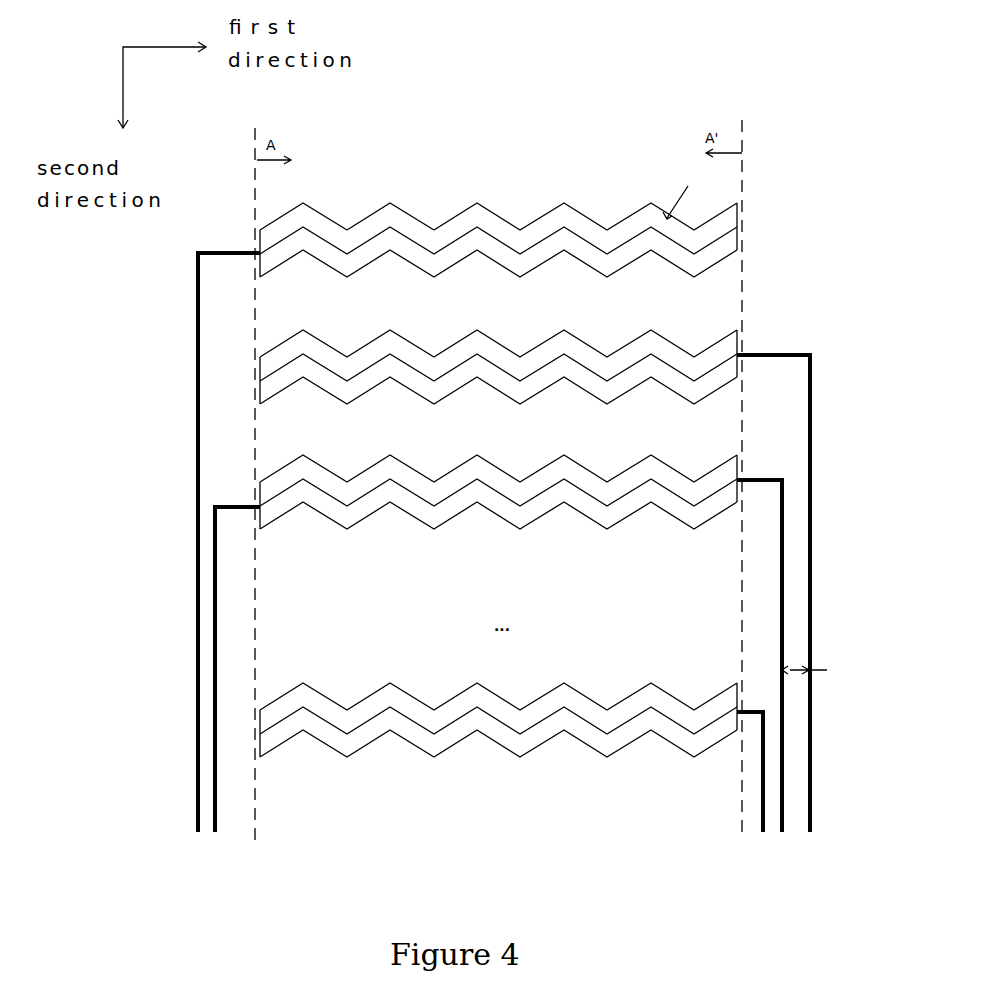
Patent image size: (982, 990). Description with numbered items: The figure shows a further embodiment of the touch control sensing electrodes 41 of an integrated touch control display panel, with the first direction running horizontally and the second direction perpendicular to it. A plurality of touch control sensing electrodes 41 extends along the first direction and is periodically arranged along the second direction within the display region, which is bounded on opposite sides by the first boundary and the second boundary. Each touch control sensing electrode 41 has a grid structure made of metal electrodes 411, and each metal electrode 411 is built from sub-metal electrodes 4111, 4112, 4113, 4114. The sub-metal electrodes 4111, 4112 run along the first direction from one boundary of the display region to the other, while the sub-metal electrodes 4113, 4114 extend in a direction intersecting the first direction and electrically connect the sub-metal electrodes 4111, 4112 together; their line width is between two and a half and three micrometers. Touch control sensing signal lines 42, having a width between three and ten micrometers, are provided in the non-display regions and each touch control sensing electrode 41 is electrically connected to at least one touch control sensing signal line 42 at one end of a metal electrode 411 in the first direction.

The touch control sensing electrode 41 is at (496, 231).
The metal electrode 411 is at (498, 210).
The sub-metal electrode 4111 is at (399, 209).
The sub-metal electrode 4112 is at (328, 222).
The sub-metal electrode 4113 is at (259, 242).
The sub-metal electrode 4114 is at (746, 223).
The touch control sensing signal line 42 is at (812, 591).